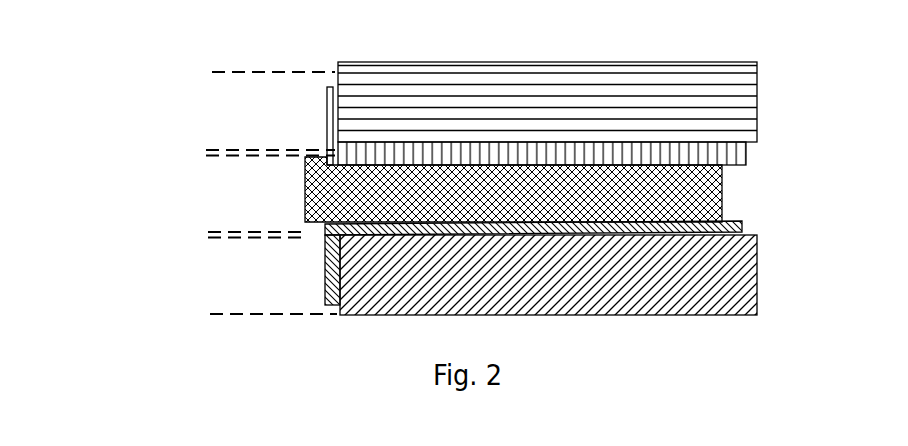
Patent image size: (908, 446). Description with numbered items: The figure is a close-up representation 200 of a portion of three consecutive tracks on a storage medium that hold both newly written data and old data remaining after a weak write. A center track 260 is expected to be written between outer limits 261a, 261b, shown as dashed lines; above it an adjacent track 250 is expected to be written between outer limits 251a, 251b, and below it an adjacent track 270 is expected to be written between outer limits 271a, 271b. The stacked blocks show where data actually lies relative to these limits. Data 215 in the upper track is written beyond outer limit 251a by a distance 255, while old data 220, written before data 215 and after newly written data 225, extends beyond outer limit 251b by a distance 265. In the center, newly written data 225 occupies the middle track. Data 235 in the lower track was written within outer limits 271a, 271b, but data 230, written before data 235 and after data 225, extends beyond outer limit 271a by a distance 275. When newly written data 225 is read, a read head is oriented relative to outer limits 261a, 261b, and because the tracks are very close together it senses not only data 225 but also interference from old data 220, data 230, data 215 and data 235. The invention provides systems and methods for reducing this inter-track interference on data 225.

The close-up representation 200 is at (801, 93).
The data 215 is at (557, 112).
The old data 220 is at (608, 164).
The newly written data 225 is at (535, 204).
The data 230 is at (744, 224).
The data 235 is at (570, 284).
The adjacent track 250 is at (204, 114).
The outer limit 251a is at (212, 72).
The outer limit 251b is at (206, 150).
The distance 255 is at (293, 61).
The center track 260 is at (204, 194).
The outer limit 261a is at (206, 156).
The outer limit 261b is at (208, 238).
The distance 265 is at (294, 164).
The adjacent track 270 is at (209, 282).
The outer limit 271a is at (208, 232).
The outer limit 271b is at (210, 314).
The distance 275 is at (284, 226).